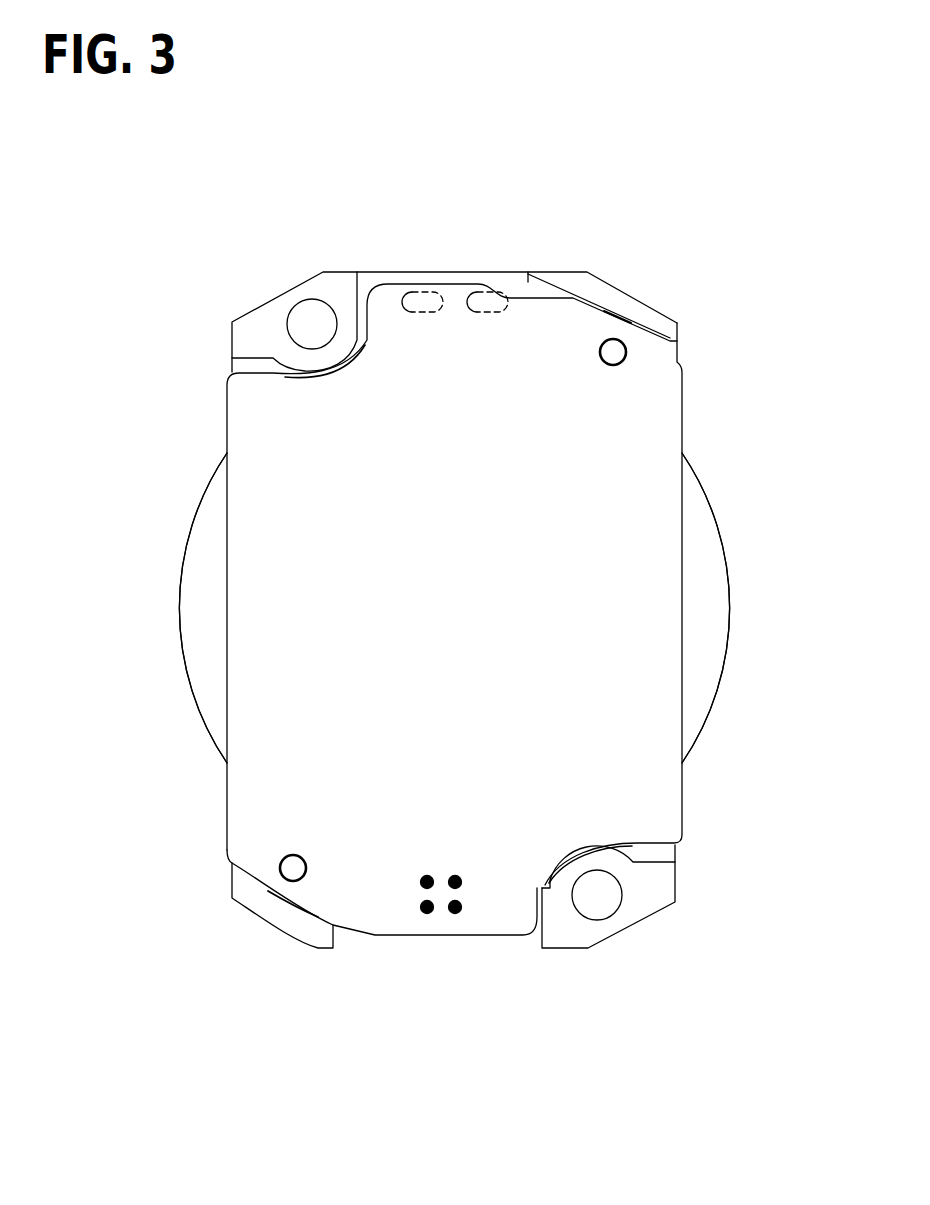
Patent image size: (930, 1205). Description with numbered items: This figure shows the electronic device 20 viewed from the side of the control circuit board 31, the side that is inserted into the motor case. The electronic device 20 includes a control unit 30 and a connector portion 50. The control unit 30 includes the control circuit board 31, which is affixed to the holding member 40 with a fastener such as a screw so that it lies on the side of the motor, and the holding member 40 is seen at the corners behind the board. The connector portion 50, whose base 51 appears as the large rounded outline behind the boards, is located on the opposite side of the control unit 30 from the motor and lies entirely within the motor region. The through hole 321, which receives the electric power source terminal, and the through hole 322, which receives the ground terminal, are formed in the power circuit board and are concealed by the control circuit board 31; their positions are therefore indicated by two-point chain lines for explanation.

The electronic device 20 is at (265, 944).
The control unit 30 is at (624, 921).
The control circuit board 31 is at (658, 392).
The holding member 40 is at (665, 878).
The connector portion 50 is at (723, 503).
The base 51 is at (712, 585).
The through hole 321 is at (472, 290).
The through hole 322 is at (405, 290).